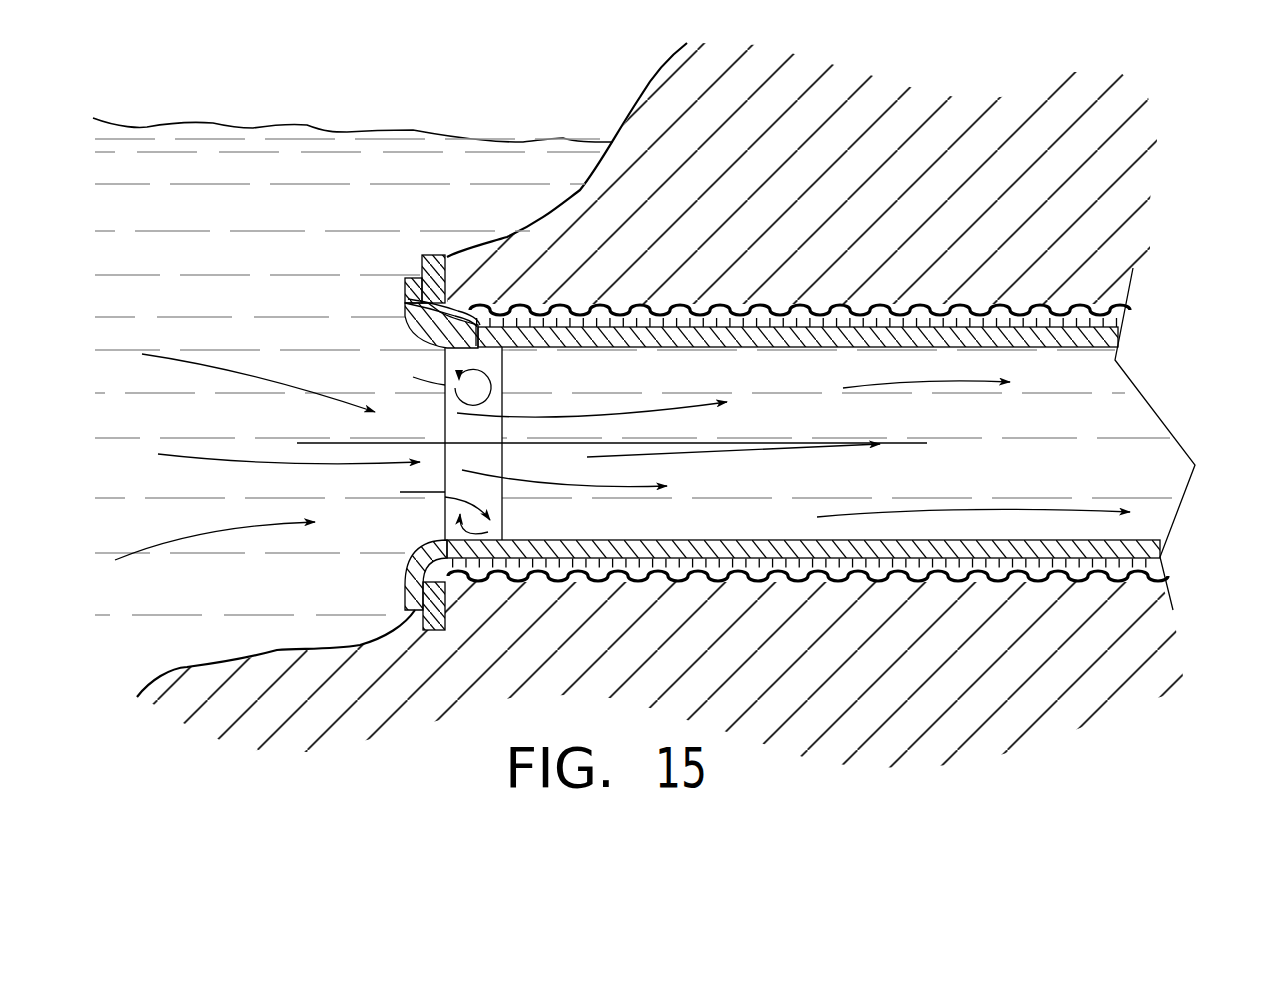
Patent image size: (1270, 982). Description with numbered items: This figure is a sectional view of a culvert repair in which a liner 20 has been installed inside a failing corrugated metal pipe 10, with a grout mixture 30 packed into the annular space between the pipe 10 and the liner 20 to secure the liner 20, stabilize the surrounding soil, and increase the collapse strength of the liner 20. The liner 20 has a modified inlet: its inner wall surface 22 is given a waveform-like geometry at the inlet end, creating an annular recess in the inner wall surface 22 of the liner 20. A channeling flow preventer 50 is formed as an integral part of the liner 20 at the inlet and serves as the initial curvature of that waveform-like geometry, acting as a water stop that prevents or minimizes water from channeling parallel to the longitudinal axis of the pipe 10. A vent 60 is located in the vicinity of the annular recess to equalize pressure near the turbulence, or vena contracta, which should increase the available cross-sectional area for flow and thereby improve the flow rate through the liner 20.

The corrugated metal pipe 10 is at (1125, 295).
The liner 20 is at (1120, 337).
The inner wall surface 22 is at (1082, 348).
The grout mixture 30 is at (1160, 576).
The channeling flow preventer 50 is at (413, 278).
The vent 60 is at (400, 296).